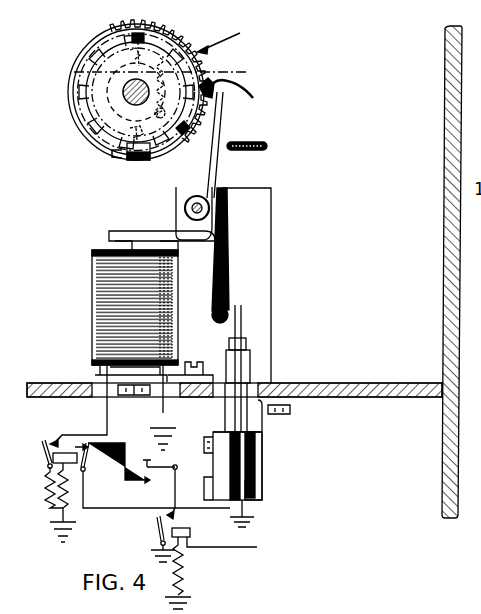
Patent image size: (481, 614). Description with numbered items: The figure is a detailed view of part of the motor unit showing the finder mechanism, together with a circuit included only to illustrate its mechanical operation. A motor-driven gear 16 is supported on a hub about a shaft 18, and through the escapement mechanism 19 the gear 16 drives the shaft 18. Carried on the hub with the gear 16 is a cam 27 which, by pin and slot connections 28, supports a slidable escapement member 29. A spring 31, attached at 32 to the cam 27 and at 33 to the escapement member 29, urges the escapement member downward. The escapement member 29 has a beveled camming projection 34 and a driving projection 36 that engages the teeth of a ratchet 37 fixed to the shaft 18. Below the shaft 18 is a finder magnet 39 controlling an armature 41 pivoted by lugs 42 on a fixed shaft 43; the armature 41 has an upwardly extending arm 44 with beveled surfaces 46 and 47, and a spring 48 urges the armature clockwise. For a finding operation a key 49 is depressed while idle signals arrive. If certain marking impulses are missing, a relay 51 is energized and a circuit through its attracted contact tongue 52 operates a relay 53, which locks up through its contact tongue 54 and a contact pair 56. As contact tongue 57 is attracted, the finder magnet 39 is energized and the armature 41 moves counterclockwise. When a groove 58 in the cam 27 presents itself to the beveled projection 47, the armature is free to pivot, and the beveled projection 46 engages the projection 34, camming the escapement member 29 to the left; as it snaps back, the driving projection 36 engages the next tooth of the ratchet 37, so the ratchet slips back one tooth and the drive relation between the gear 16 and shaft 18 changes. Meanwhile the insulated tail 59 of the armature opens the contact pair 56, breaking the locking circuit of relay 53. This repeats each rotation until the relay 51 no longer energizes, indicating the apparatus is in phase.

The gear 16 is at (184, 40).
The shaft 18 is at (127, 96).
The escapement mechanism 19 is at (230, 37).
The cam 27 is at (94, 52).
The pin and slot connections 28 is at (174, 38).
The escapement member 29 is at (75, 63).
The spring 31 is at (172, 72).
The attachment point 32 is at (184, 132).
The attachment point 33 is at (178, 70).
The beveled camming projection 34 is at (138, 161).
The driving projection 36 is at (134, 35).
The ratchet 37 is at (83, 78).
The finder magnet 39 is at (93, 300).
The armature 41 is at (132, 232).
The lugs 42 is at (210, 186).
The fixed shaft 43 is at (185, 208).
The upwardly extending arm 44 is at (222, 160).
The beveled surface 46 is at (227, 100).
The beveled surface 47 is at (242, 93).
The spring 48 is at (262, 141).
The key 49 is at (158, 466).
The relay 51 is at (186, 528).
The contact tongue 52 is at (156, 517).
The relay 53 is at (68, 442).
The contact tongue 54 is at (95, 455).
The contact pair 56 is at (238, 348).
The contact tongue 57 is at (38, 452).
The groove 58 is at (127, 157).
The insulated tail 59 is at (226, 272).